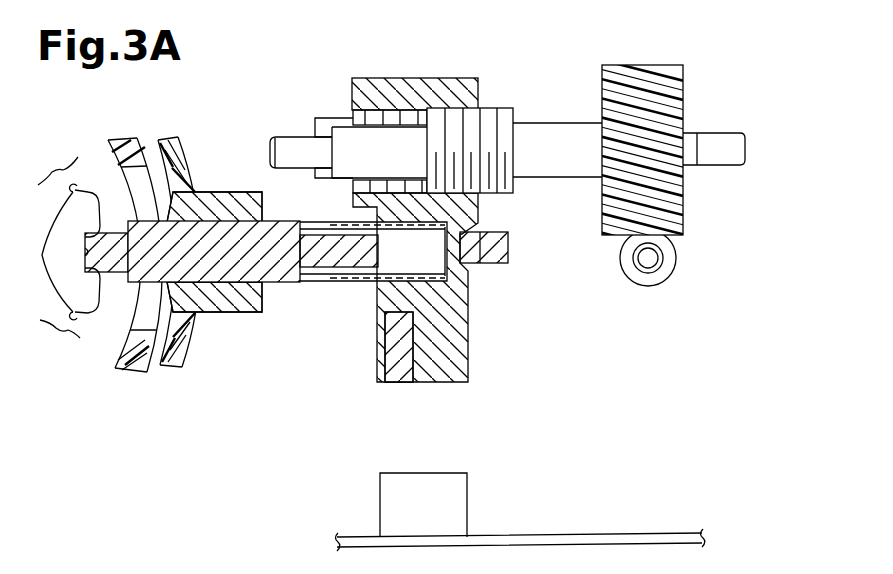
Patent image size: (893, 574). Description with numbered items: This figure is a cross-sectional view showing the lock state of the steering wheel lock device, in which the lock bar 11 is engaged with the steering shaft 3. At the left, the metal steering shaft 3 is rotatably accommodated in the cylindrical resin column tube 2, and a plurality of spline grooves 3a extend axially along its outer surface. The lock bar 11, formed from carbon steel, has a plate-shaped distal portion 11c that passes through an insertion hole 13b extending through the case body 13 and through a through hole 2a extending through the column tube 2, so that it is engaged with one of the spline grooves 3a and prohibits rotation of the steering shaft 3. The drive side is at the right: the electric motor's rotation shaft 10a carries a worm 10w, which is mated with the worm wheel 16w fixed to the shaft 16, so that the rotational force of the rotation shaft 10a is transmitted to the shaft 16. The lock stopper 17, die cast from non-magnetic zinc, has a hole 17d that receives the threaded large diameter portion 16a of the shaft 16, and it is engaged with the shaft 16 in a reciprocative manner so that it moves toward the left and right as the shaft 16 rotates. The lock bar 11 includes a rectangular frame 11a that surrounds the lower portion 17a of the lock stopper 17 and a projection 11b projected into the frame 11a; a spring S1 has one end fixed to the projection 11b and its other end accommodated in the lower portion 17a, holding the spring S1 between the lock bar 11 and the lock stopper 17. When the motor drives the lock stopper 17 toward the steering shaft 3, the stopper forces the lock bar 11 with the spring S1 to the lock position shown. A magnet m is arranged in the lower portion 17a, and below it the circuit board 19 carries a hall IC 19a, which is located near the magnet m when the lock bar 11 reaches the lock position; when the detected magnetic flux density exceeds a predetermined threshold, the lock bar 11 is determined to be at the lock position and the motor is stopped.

The column tube 2 is at (144, 132).
The through hole 2a is at (148, 332).
The steering shaft 3 is at (45, 220).
The spline grooves 3a is at (32, 253).
The lock bar 11 is at (284, 210).
The rectangular frame 11a is at (508, 240).
The projection 11b is at (314, 240).
The plate-shaped distal portion 11c is at (273, 278).
The case body 13 is at (200, 138).
The insertion hole 13b is at (227, 283).
The shaft 16 is at (556, 112).
The threaded large diameter portion 16a is at (490, 108).
The worm wheel 16w is at (648, 64).
The lock stopper 17 is at (404, 69).
The lower portion 17a is at (468, 337).
The hole 17d is at (358, 113).
The worm 10w is at (676, 267).
The rotation shaft 10a is at (641, 262).
The circuit board 19 is at (606, 525).
The hall IC 19a is at (467, 493).
The magnet m is at (402, 382).
The spring S1 is at (332, 283).